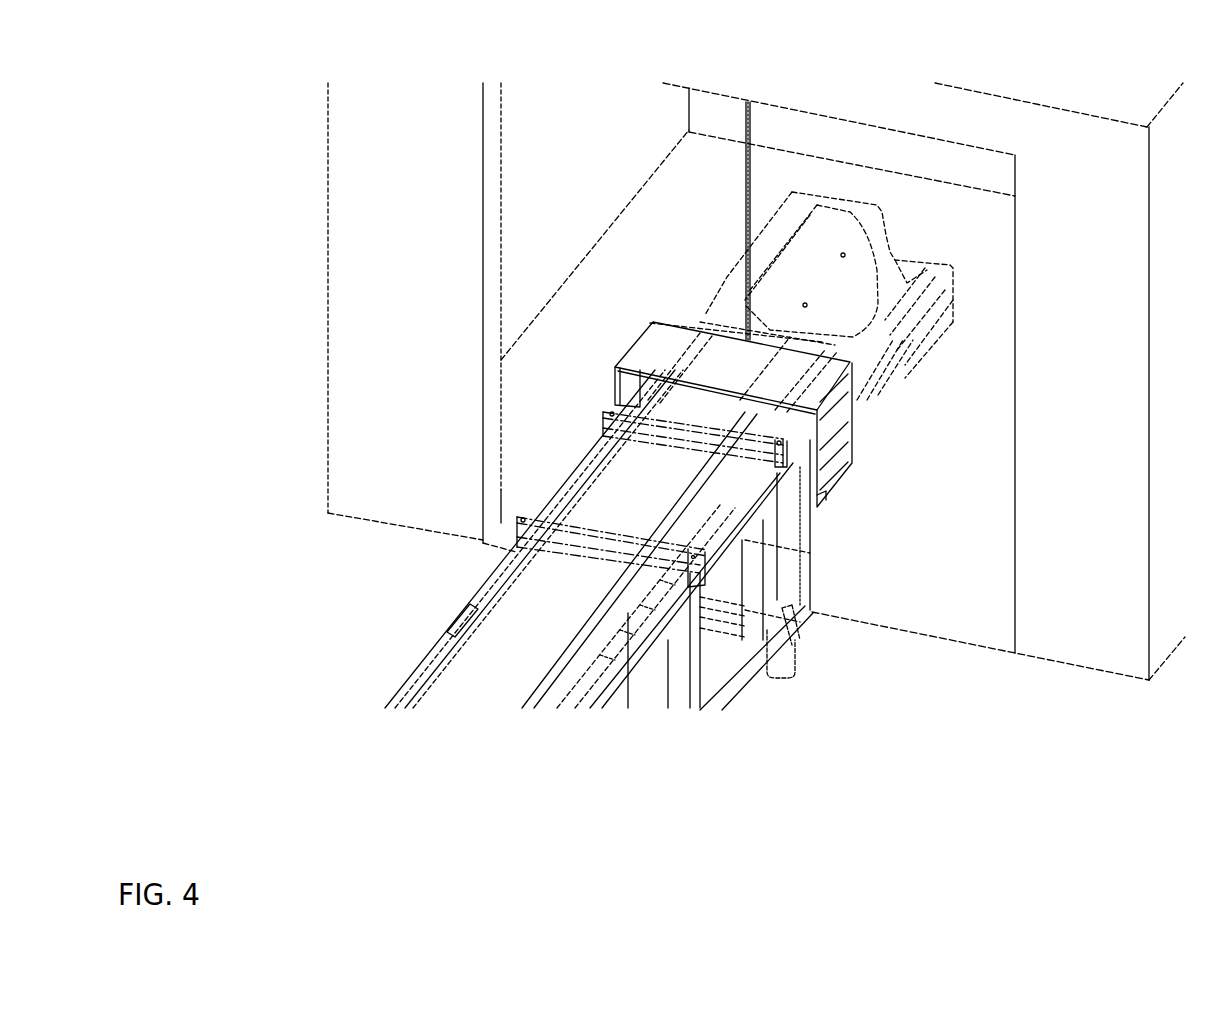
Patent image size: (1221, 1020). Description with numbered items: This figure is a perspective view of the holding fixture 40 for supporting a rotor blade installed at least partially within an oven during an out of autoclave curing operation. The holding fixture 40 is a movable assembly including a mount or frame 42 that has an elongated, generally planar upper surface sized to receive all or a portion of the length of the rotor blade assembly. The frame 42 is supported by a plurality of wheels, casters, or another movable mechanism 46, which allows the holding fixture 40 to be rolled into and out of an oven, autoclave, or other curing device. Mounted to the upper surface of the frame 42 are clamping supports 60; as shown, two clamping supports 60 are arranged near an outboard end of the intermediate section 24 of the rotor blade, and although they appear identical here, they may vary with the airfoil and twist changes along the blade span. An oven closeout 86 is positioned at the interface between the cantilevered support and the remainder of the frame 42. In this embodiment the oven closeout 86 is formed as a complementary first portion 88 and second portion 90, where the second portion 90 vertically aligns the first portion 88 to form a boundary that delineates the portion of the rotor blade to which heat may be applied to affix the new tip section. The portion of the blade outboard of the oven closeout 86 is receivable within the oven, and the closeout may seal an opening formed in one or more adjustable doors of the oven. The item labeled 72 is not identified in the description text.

The intermediate section 24 is at (467, 667).
The holding fixture 40 is at (781, 735).
The frame 42 is at (690, 663).
The movable mechanism 46 is at (777, 663).
The clamping support 60 is at (592, 418).
The seat 72 is at (910, 202).
The oven closeout 86 is at (872, 425).
The first portion 88 is at (838, 458).
The second portion 90 is at (727, 372).